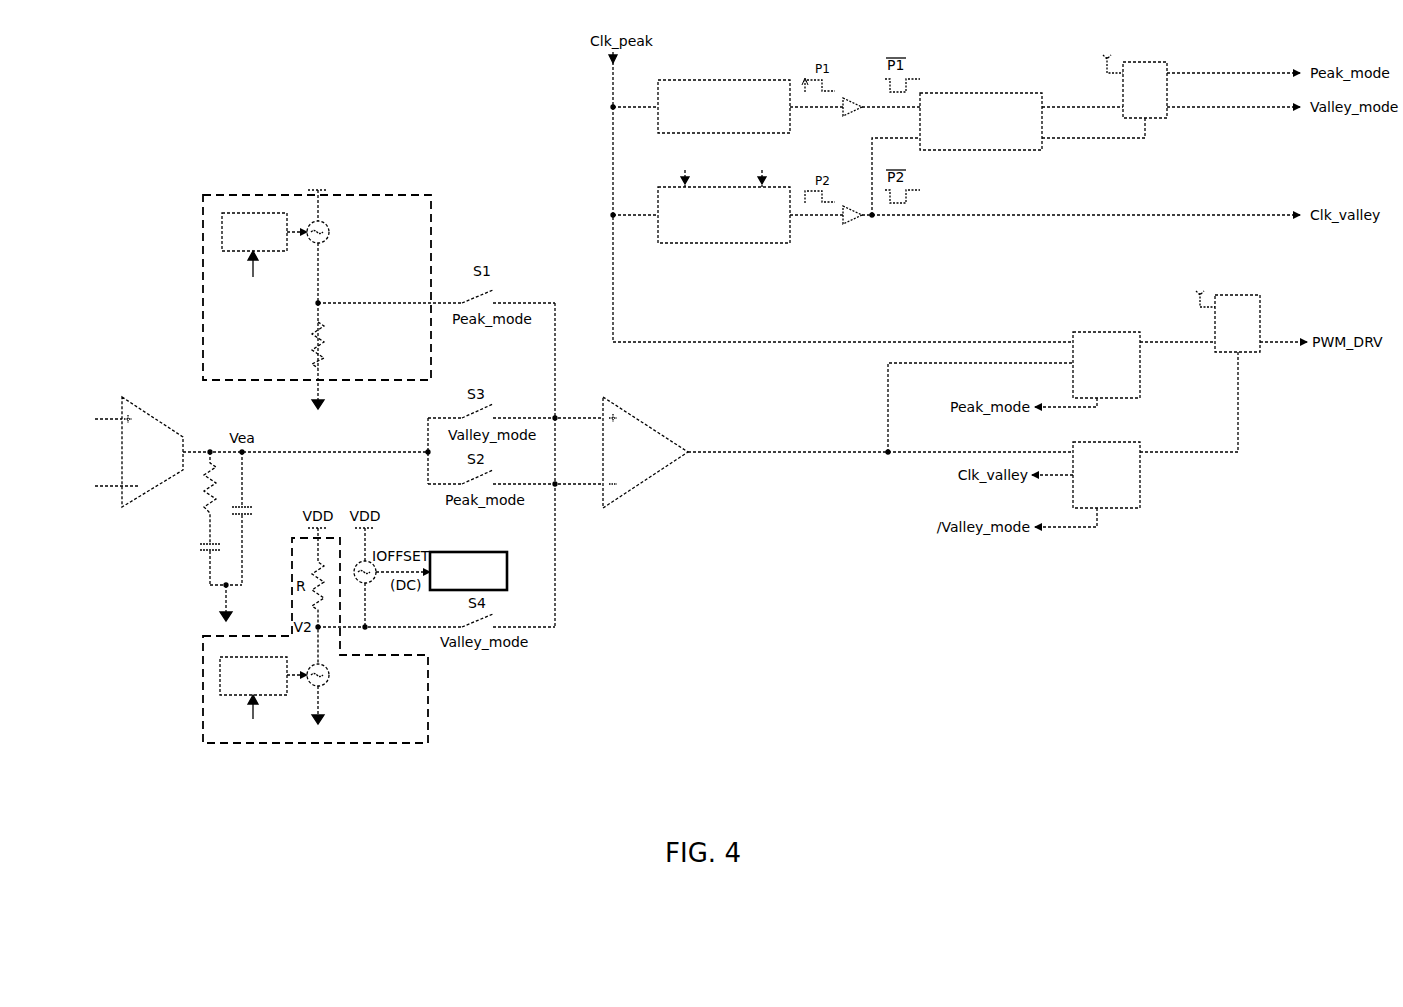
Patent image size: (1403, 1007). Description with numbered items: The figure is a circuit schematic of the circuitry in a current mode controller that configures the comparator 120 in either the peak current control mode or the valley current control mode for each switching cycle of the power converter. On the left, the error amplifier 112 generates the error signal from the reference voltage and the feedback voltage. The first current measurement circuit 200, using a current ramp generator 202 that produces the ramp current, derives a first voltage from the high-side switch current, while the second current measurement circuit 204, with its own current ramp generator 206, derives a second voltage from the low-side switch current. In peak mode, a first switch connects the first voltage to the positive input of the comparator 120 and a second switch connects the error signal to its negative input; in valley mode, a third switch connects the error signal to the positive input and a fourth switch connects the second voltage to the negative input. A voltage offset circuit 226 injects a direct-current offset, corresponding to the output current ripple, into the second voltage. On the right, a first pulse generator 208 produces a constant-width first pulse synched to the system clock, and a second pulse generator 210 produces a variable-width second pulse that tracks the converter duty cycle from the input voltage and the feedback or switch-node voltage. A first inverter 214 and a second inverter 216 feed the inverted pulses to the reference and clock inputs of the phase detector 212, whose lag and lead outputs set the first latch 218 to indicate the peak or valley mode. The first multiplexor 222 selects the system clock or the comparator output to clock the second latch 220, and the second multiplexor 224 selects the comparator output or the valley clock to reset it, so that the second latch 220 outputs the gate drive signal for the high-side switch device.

The error amplifier 112 is at (241, 452).
The comparator 120 is at (838, 452).
The first current measurement circuit 200 is at (325, 290).
The current ramp generator 202 is at (264, 232).
The second current measurement circuit 204 is at (323, 640).
The current ramp generator 206 is at (263, 676).
The first pulse generator 208 is at (728, 106).
The second pulse generator 210 is at (728, 198).
The phase detector 212 is at (1032, 121).
The first inverter 214 is at (852, 98).
The second inverter 216 is at (850, 226).
The first latch 218 is at (1201, 86).
The second latch 220 is at (1251, 321).
The first multiplexor 222 is at (1125, 369).
The second multiplexor 224 is at (1135, 439).
The voltage offset circuit 226 is at (468, 552).